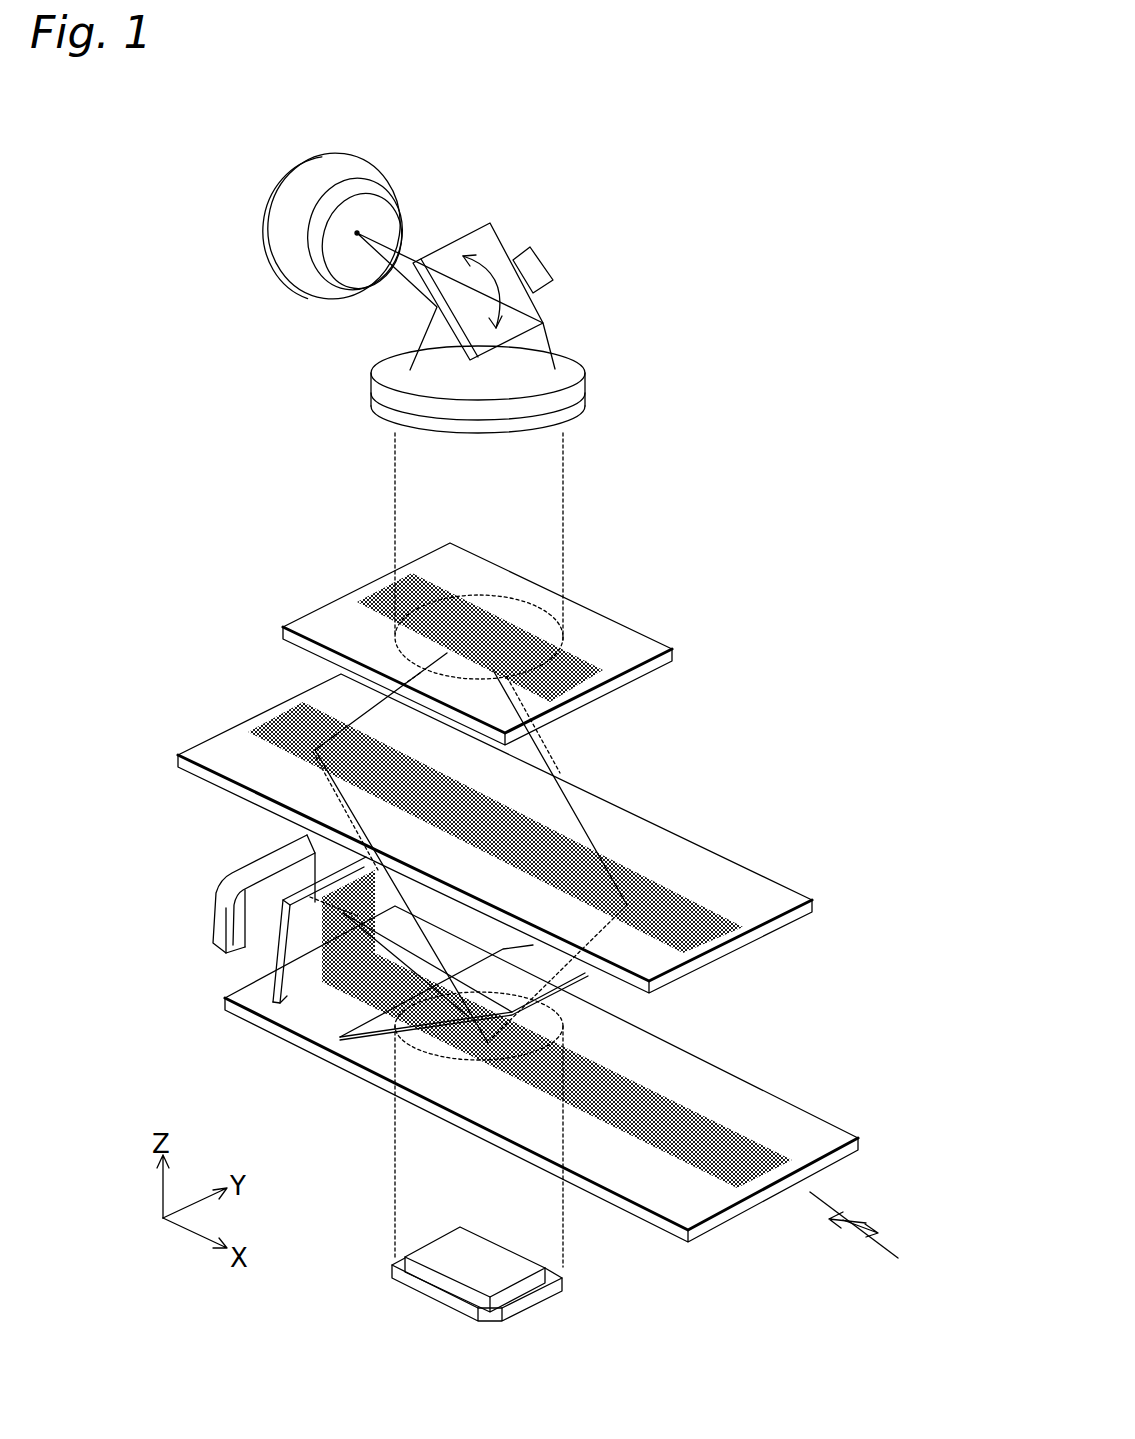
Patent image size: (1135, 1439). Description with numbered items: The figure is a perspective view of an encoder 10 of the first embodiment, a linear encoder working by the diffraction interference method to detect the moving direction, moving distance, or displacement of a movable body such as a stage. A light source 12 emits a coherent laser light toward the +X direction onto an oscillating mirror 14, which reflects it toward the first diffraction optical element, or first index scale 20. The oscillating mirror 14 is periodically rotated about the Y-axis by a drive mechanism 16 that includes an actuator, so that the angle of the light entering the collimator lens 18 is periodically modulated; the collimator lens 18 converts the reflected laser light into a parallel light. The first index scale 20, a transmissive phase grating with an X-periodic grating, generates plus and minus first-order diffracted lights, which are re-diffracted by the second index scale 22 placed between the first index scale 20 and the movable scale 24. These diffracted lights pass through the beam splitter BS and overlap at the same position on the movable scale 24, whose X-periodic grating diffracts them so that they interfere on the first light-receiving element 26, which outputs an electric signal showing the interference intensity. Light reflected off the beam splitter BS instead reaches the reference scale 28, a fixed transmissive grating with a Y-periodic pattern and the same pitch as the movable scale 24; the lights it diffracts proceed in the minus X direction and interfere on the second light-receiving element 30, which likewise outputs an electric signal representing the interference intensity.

The encoder 10 is at (770, 167).
The light source 12 is at (357, 152).
The oscillating mirror 14 is at (490, 227).
The drive mechanism 16 is at (540, 260).
The collimator lens 18 is at (575, 367).
The first diffraction optical element (first index scale) 20 is at (587, 613).
The second diffraction optical element (second index scale) 22 is at (705, 855).
The movable scale (movable diffraction grating) 24 is at (762, 1102).
The first light-receiving element 26 is at (472, 1242).
The reference scale (fixed diffraction grating) 28 is at (285, 995).
The second light-receiving element 30 is at (236, 893).
The beam splitter BS is at (537, 947).